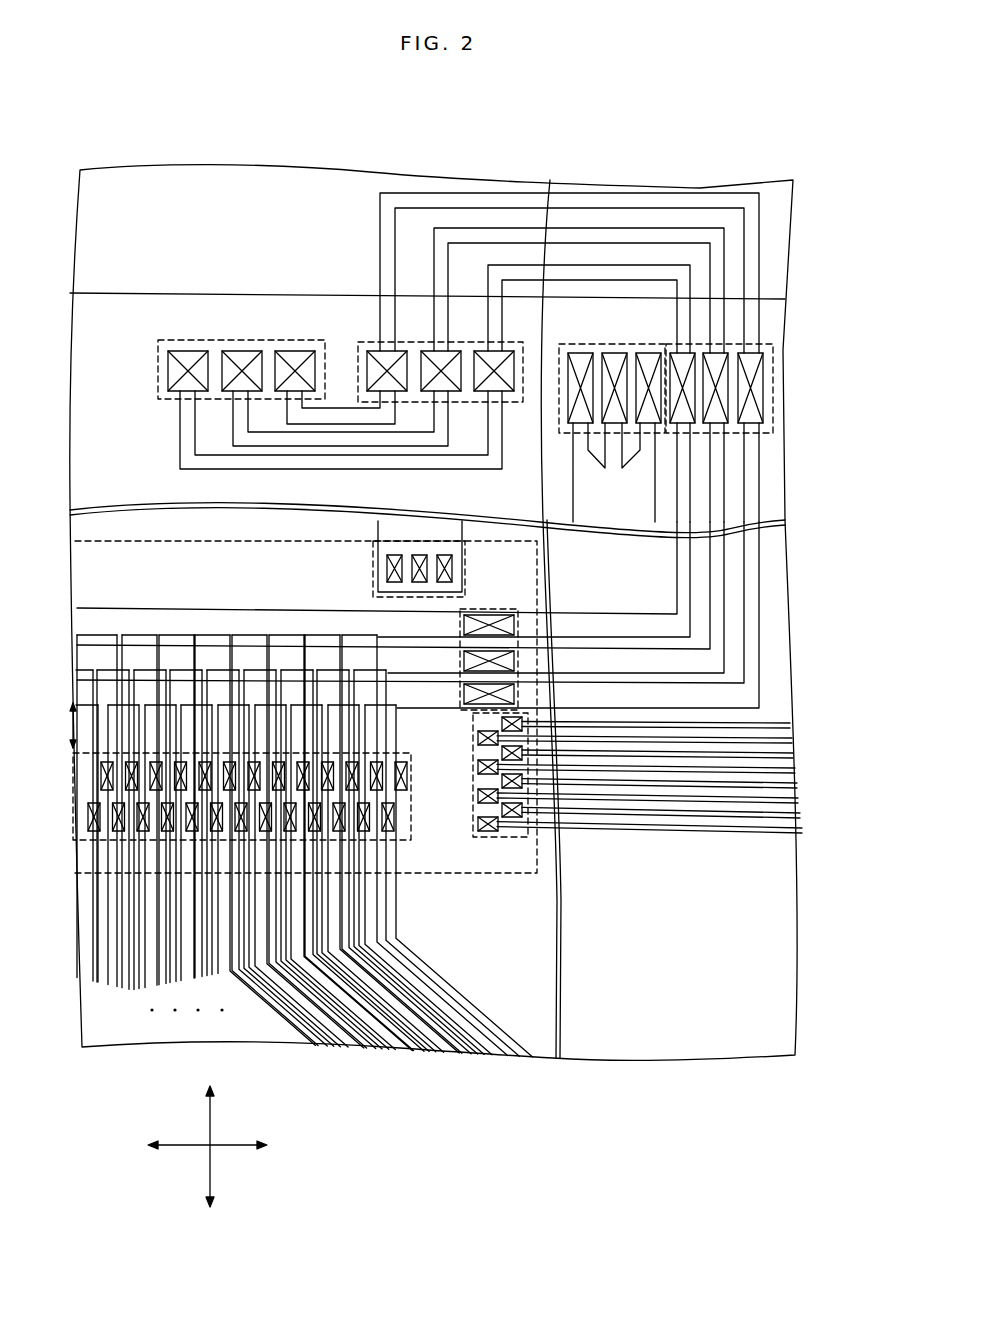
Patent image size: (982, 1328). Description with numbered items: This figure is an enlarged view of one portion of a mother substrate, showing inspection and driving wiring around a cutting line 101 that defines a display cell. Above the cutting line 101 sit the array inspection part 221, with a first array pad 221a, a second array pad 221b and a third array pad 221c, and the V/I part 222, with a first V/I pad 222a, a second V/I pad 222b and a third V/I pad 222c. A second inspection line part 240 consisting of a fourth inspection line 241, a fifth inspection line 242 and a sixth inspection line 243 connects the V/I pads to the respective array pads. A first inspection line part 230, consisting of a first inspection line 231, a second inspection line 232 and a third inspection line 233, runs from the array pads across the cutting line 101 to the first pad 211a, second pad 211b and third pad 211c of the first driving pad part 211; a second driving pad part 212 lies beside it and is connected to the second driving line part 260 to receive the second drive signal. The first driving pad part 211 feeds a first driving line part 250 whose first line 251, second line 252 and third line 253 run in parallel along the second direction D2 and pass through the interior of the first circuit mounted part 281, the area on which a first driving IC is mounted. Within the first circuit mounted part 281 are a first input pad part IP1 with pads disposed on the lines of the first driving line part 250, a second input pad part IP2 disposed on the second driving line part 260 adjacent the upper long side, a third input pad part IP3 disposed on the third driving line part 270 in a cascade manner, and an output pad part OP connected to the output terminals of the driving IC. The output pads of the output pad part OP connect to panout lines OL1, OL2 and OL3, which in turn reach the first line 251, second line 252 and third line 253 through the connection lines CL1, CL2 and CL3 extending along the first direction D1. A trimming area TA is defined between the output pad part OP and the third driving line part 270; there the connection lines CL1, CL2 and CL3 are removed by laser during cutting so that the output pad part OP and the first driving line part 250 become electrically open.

The cutting line 101 is at (97, 293).
The first inspection line part 230 is at (569, 233).
The first inspection line 231 is at (500, 198).
The second inspection line 232 is at (495, 235).
The third inspection line 233 is at (495, 273).
The V/I part 222 is at (211, 351).
The first V/I pad 222a is at (288, 344).
The second V/I pad 222b is at (233, 344).
The third V/I pad 222c is at (178, 344).
The array inspection part 221 is at (431, 405).
The first array pad 221a is at (397, 393).
The second array pad 221b is at (450, 393).
The third array pad 221c is at (502, 393).
The second inspection line part 240 is at (341, 463).
The fourth inspection line 241 is at (295, 447).
The fifth inspection line 242 is at (333, 456).
The sixth inspection line 243 is at (268, 497).
The second driving pad part 212 is at (586, 342).
The first driving pad part 211 is at (754, 433).
The first pad 211a is at (755, 433).
The second pad 211b is at (683, 433).
The third pad 211c is at (712, 433).
The first driving line part 250 is at (418, 615).
The first line 251 is at (745, 555).
The second line 252 is at (717, 577).
The third line 253 is at (678, 598).
The second driving line part 260 is at (446, 559).
The first input pad part IP1 is at (492, 609).
The second input pad part IP2 is at (466, 563).
The third input pad part IP3 is at (503, 838).
The first circuit mounted part 281 is at (158, 544).
The third driving line part 270 is at (804, 836).
The first connection line CL1 is at (304, 813).
The second connection line CL2 is at (297, 812).
The third connection line CL3 is at (292, 812).
The first panout line OL1 is at (397, 930).
The second panout line OL2 is at (388, 909).
The third panout line OL3 is at (377, 887).
The output pad part OP is at (102, 843).
The trimming area TA is at (60, 725).
The first direction D1 is at (214, 1159).
The second direction D2 is at (227, 1146).